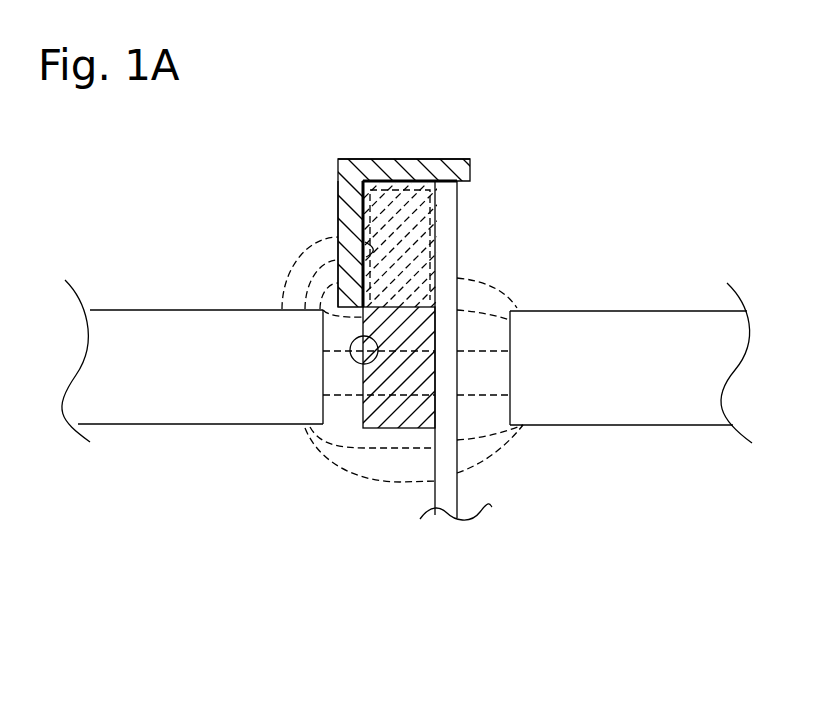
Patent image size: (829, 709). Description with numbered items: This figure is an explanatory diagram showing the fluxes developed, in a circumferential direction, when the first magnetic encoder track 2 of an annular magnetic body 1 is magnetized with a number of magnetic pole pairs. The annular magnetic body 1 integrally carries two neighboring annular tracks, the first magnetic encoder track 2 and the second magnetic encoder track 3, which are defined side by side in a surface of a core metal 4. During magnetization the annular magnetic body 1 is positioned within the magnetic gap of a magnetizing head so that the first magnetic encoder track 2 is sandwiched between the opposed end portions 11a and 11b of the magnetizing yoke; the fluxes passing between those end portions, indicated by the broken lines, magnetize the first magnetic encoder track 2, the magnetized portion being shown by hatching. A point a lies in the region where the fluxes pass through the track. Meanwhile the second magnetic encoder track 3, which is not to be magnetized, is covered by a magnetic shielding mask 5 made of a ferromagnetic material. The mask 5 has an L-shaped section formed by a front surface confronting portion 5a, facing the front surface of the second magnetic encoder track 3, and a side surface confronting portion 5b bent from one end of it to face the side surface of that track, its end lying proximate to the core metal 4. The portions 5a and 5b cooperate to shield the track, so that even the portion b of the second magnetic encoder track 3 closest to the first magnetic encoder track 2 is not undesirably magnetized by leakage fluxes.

The annular magnetic body 1 is at (401, 294).
The first magnetic encoder track 2 is at (380, 403).
The second magnetic encoder track 3 is at (405, 190).
The core metal 4 is at (443, 470).
The magnetic shielding mask 5 is at (401, 199).
The front surface confronting portion 5a is at (338, 238).
The side surface confronting portion 5b is at (423, 159).
The opposed end portion 11a is at (203, 317).
The opposed end portion 11b is at (590, 320).
The point a is at (352, 361).
The portion of the second magnetic encoder track b is at (397, 202).